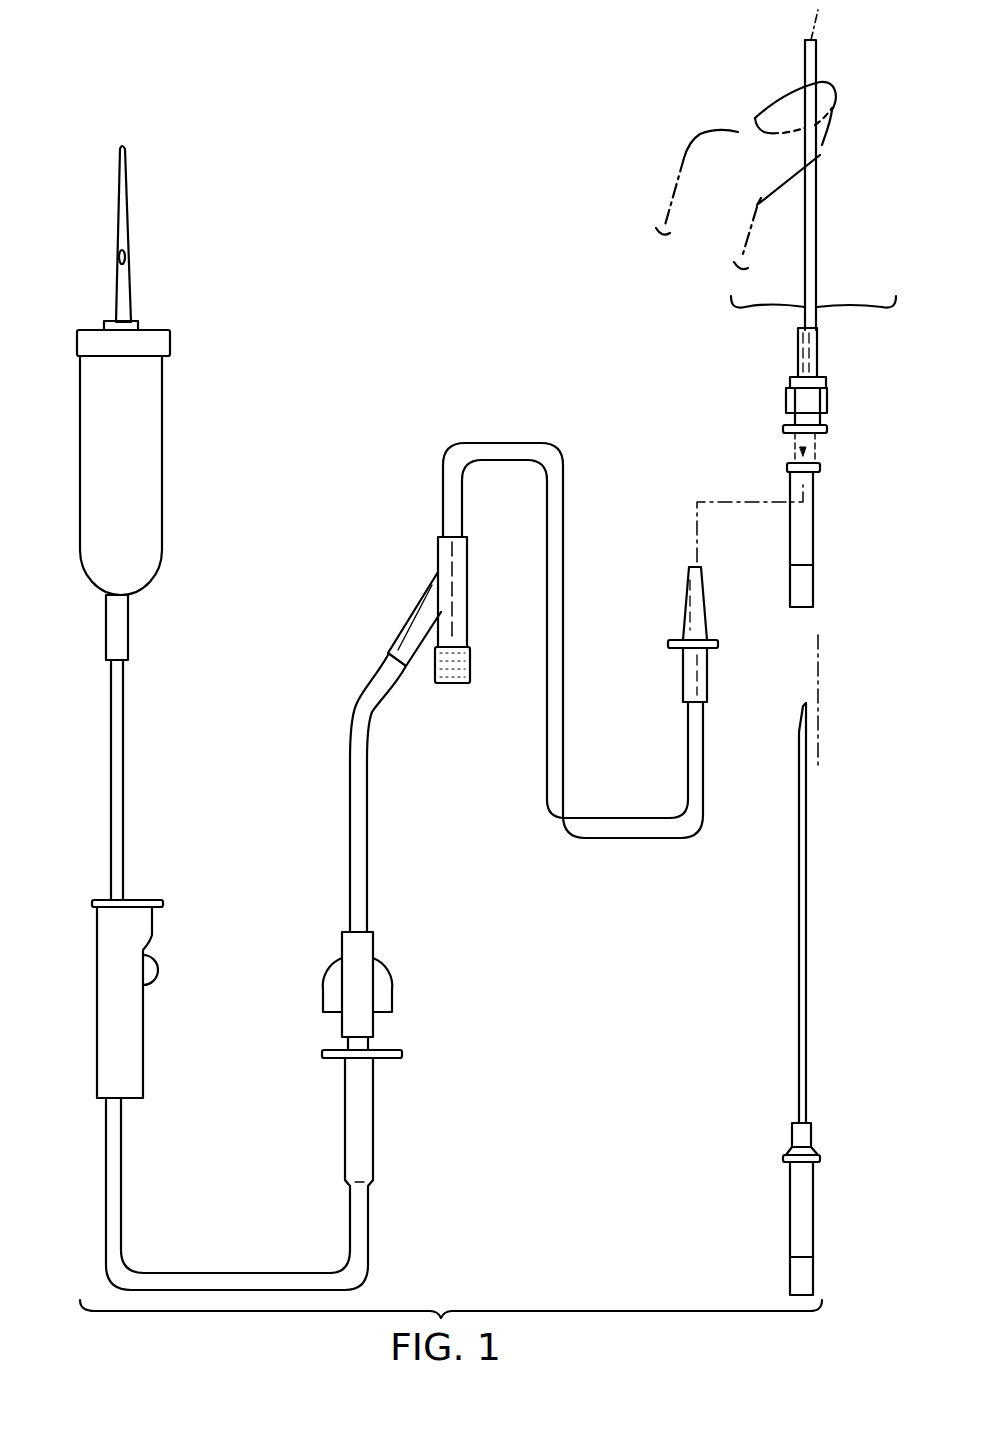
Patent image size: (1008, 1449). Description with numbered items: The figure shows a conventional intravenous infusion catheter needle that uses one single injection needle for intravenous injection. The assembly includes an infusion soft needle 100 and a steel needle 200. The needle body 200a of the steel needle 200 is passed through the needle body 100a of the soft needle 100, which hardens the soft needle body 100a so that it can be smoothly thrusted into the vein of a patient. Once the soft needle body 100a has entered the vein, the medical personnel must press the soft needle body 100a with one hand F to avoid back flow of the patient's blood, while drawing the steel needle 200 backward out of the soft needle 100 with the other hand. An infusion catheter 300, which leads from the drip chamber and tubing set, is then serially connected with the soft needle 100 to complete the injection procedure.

The hand F is at (740, 142).
The infusion soft needle 100 is at (828, 382).
The soft needle body 100a is at (808, 203).
The steel needle 200 is at (812, 497).
The needle body of the steel needle 200a is at (797, 953).
The infusion catheter 300 is at (690, 590).